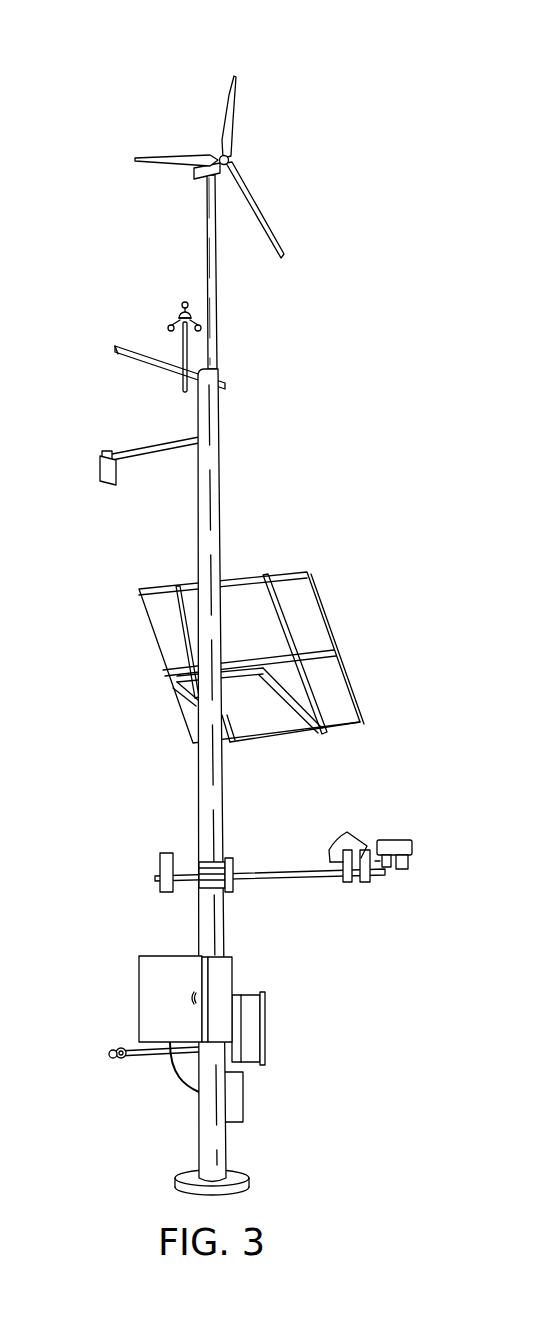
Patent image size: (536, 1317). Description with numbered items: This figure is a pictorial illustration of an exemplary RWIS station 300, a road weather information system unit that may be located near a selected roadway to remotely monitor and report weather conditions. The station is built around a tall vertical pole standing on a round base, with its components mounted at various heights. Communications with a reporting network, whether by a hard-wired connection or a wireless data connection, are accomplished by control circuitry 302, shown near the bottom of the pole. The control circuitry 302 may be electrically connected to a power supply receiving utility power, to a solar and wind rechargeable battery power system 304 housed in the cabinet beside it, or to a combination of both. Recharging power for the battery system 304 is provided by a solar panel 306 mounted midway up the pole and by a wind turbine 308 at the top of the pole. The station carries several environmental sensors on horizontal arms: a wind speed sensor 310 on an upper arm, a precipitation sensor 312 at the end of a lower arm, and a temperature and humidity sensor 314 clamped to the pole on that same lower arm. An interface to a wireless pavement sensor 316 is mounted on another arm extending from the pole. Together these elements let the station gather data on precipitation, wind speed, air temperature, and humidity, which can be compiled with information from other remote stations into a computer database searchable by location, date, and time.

The RWIS station 300 is at (105, 64).
The control circuitry 302 is at (254, 1025).
The solar and wind rechargeable battery power system 304 is at (148, 1002).
The solar panel 306 is at (160, 638).
The wind turbine 308 is at (235, 115).
The wind speed sensor 310 is at (179, 318).
The precipitation sensor 312 is at (394, 826).
The temperature and humidity sensor 314 is at (158, 878).
The interface to a wireless pavement sensor 316 is at (97, 459).